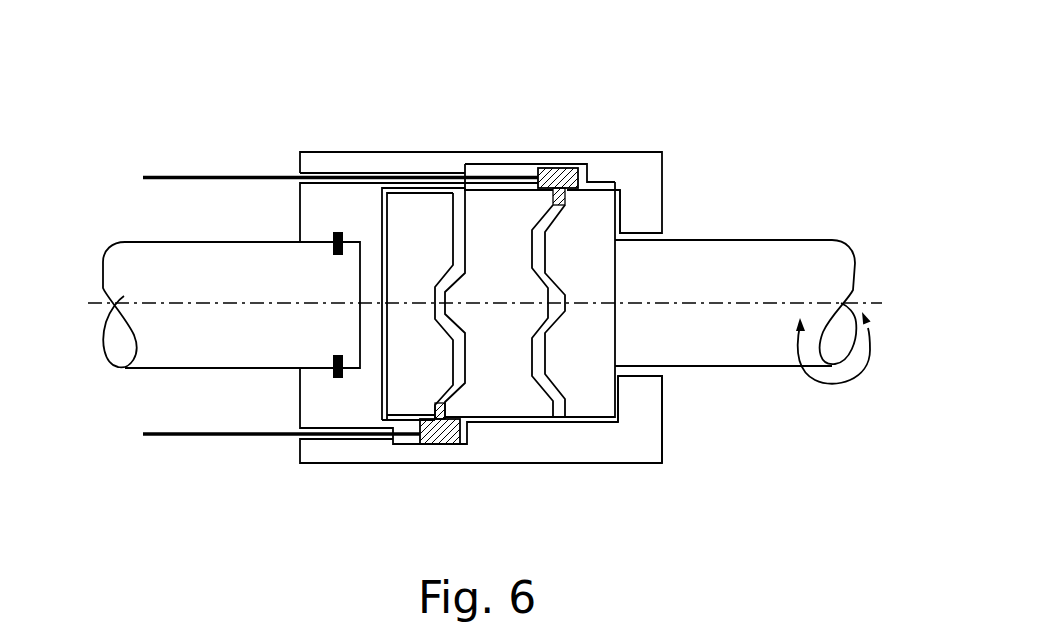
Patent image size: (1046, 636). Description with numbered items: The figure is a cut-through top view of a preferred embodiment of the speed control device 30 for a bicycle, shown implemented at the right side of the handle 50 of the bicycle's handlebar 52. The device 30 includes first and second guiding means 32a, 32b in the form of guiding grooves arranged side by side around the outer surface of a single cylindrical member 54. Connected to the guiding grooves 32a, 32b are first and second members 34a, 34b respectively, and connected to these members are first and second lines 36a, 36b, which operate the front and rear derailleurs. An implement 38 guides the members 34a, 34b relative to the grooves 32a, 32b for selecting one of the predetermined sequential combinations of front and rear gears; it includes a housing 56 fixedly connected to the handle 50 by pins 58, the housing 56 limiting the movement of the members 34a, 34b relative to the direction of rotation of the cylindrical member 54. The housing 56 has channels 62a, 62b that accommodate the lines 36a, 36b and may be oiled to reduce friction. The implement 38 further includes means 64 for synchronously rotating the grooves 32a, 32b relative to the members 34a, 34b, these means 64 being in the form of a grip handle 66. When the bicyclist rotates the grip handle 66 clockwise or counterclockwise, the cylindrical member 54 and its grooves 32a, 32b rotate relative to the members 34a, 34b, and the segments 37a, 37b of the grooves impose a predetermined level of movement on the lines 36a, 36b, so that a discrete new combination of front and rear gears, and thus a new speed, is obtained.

The speed control device 30 is at (788, 66).
The first guiding means 32a is at (550, 388).
The second guiding means 32b is at (457, 387).
The first member 34a is at (563, 167).
The second member 34b is at (440, 445).
The first line 36a is at (230, 176).
The second line 36b is at (196, 438).
The segment 37a is at (547, 363).
The segment 37b is at (447, 363).
The implement 38 is at (676, 223).
The handle 50 is at (132, 272).
The handlebar 52 is at (112, 133).
The cylindrical member 54 is at (597, 208).
The housing 56 is at (388, 160).
The pins 58 is at (333, 252).
The channel 62a is at (282, 187).
The channel 62b is at (300, 442).
The means for synchronously rotating 64 is at (712, 410).
The grip handle 66 is at (738, 348).